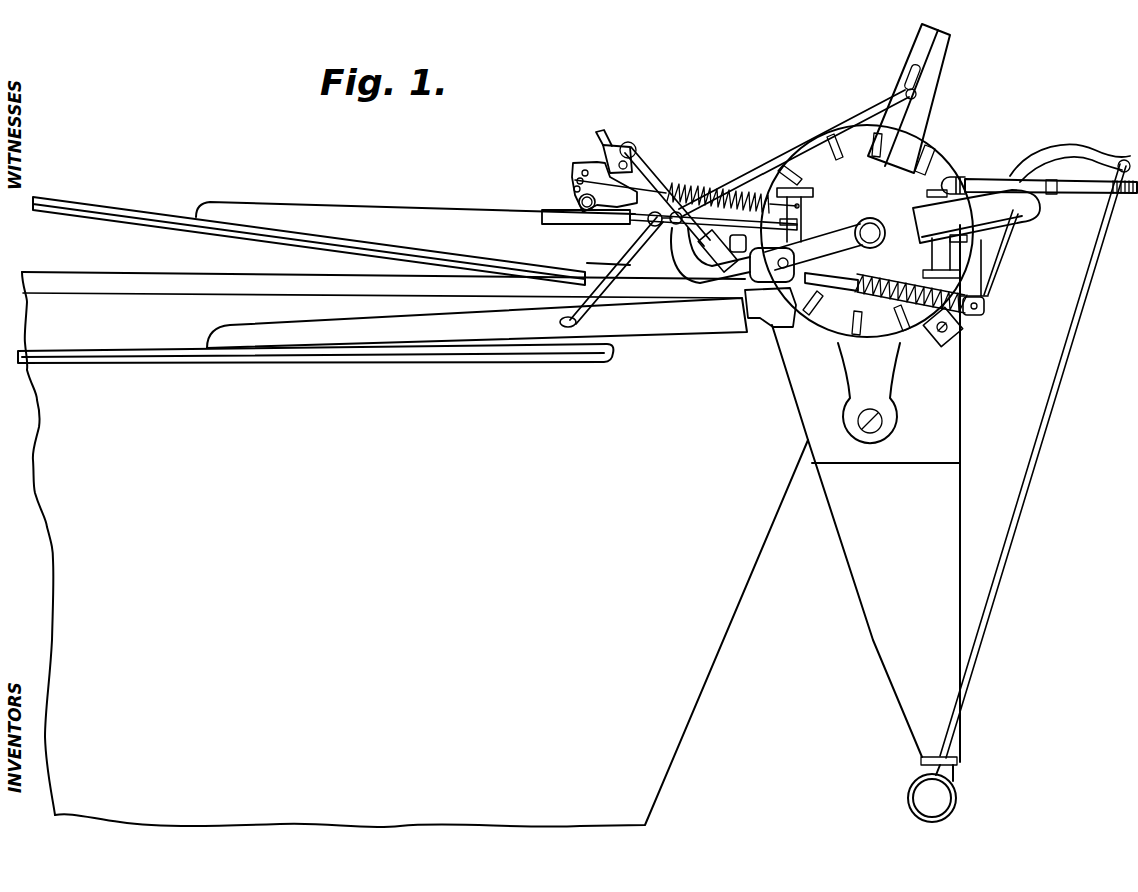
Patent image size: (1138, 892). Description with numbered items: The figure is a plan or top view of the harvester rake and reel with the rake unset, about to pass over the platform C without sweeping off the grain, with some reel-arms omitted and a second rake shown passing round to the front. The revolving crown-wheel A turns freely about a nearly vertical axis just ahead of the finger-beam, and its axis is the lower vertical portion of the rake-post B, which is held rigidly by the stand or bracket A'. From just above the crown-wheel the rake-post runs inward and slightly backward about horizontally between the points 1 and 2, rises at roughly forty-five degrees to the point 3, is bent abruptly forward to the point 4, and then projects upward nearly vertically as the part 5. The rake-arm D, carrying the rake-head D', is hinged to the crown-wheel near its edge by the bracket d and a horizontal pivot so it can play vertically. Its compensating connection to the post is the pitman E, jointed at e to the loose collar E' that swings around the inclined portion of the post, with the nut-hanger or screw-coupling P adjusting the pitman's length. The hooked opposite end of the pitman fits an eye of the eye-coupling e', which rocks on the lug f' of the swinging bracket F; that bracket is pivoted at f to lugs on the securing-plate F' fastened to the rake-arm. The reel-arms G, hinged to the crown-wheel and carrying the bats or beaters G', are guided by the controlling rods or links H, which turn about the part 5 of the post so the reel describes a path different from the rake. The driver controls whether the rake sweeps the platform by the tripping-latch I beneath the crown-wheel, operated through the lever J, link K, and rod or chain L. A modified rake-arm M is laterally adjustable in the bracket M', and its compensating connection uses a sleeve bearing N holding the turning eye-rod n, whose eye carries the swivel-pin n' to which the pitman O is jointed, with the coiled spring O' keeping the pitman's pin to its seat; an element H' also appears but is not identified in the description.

The crown-wheel A is at (867, 231).
The stand or bracket A' is at (866, 523).
The rake-post B is at (880, 224).
The platform C is at (415, 549).
The rake-arm D is at (415, 233).
The rake-head D' is at (309, 241).
The rod or pitman E is at (679, 207).
The loose collar or turning hanger-bracket E' is at (769, 307).
The swinging bracket F is at (596, 177).
The metallic securing-plate F' is at (577, 228).
The pivot f is at (587, 220).
The arm or lug of the swinging bracket f' is at (599, 134).
The reel-arms G is at (578, 186).
The bats or beaters G' is at (315, 368).
The controlling rods or links H is at (665, 234).
The threaded bar H' is at (1032, 175).
The tripping-latch I is at (783, 160).
The lever J is at (1050, 156).
The link K is at (1012, 226).
The rod or chain L is at (1033, 461).
The rake-arm M is at (976, 216).
The adjusting-bracket M' is at (928, 257).
The sleeve bearing or socket N is at (972, 273).
The turning eye-rod or rocking pivot-pin n is at (983, 302).
The eye-coupling or swivel-pin n' is at (960, 326).
The pitman O is at (822, 303).
The coiled spring O' is at (881, 313).
The nut-hanger or screw-coupling P is at (838, 285).
The bracket d is at (713, 214).
The joint e is at (747, 240).
The eye-coupling or socket-piece e' is at (628, 149).
The point on the rake-post 1 is at (859, 239).
The point on the rake-post 2 is at (806, 253).
The point on the rake-post 3 is at (710, 259).
The point on the rake-post 4 is at (680, 229).
The upper vertical part of the rake-post 5 is at (656, 224).